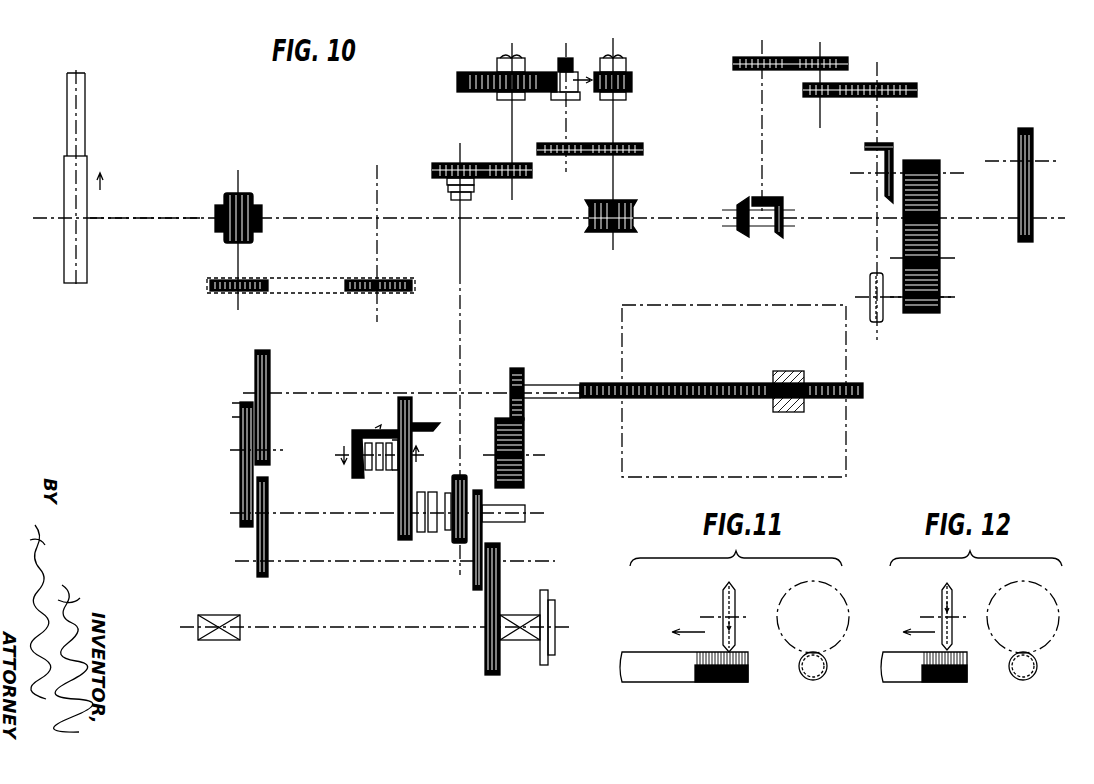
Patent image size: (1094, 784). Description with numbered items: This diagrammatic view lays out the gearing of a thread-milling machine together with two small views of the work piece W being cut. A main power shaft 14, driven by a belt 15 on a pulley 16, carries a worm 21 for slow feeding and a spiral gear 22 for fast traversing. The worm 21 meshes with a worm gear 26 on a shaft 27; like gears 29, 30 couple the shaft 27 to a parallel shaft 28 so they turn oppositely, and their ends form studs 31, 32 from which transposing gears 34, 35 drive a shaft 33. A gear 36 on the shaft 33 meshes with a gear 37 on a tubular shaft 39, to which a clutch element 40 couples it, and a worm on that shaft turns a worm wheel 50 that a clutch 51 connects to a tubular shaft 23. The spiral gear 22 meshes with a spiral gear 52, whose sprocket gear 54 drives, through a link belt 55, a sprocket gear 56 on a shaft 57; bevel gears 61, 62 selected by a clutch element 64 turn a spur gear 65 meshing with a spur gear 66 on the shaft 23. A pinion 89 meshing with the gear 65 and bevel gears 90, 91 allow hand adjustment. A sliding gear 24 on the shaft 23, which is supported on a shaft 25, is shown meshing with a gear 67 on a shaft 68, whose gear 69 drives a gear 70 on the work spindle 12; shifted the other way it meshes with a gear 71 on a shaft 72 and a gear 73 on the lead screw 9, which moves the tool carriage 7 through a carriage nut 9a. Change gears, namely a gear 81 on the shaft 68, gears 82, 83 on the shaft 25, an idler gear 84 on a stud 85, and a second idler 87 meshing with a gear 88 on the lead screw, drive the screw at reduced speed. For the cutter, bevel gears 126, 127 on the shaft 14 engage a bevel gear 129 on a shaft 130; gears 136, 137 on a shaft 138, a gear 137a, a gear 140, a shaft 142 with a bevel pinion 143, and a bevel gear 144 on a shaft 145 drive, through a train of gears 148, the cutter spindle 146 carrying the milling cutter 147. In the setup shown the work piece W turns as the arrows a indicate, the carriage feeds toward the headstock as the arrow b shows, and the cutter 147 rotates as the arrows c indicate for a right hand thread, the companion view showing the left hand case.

In FIG. 10, the tool carriage 7 is at (835, 434).
In FIG. 10, the lead screw 9 is at (640, 398).
In FIG. 10, the carriage nut 9a is at (780, 412).
In FIG. 10, the work spindle 12 is at (320, 627).
In FIG. 10, the main power shaft 14 is at (165, 218).
In FIG. 10, the belt 15 is at (85, 97).
In FIG. 10, the pulley 16 is at (87, 242).
In FIG. 10, the worm 21 is at (597, 230).
In FIG. 10, the spiral gear 22 is at (244, 194).
In FIG. 10, the tubular shaft 23 is at (520, 505).
In FIG. 10, the sliding gear 24 is at (525, 516).
In FIG. 10, the shaft 25 is at (294, 513).
In FIG. 10, the worm gear 26 is at (637, 226).
In FIG. 10, the shaft 27 is at (614, 190).
In FIG. 10, the shaft 28 is at (566, 122).
In FIG. 10, the gear 29 is at (642, 148).
In FIG. 10, the gear 30 is at (560, 155).
In FIG. 10, the stud 31 is at (626, 60).
In FIG. 10, the stud 32 is at (562, 60).
In FIG. 10, the shaft 33 is at (510, 121).
In FIG. 10, the transposing gear 34 is at (588, 72).
In FIG. 10, the transposing gear 35 is at (460, 72).
In FIG. 10, the gear 36 is at (521, 178).
In FIG. 10, the gear 37 is at (440, 165).
In FIG. 10, the tubular shaft 39 is at (462, 302).
In FIG. 10, the clutch element 40 is at (455, 192).
In FIG. 10, the worm wheel 50 is at (457, 544).
In FIG. 10, the clutch 51 is at (428, 534).
In FIG. 10, the spiral gear 52 is at (261, 214).
In FIG. 10, the sprocket gear 54 is at (212, 287).
In FIG. 10, the link belt 55 is at (303, 278).
In FIG. 10, the sprocket gear 56 is at (398, 281).
In FIG. 10, the shaft 57 is at (377, 322).
In FIG. 10, the bevel gear 61 is at (360, 437).
In FIG. 10, the bevel gear 62 is at (396, 478).
In FIG. 10, the clutch element 64 is at (370, 472).
In FIG. 10, the spur gear 65 is at (413, 468).
In FIG. 10, the spur gear 66 is at (398, 520).
In FIG. 10, the gear 67 is at (478, 590).
In FIG. 10, the shaft 68 is at (346, 561).
In FIG. 10, the gear 69 is at (500, 550).
In FIG. 10, the gear 70 is at (486, 660).
In FIG. 10, the gear 71 is at (524, 470).
In FIG. 10, the shaft 72 is at (524, 455).
In FIG. 10, the gear 73 is at (517, 368).
In FIG. 10, the gear 81 is at (265, 578).
In FIG. 10, the gear 82 is at (268, 488).
In FIG. 10, the gear 83 is at (238, 526).
In FIG. 10, the idler gear 84 is at (240, 424).
In FIG. 10, the stud 85 is at (240, 452).
In FIG. 10, the second idler 87 is at (270, 442).
In FIG. 10, the gear 88 is at (255, 358).
In FIG. 10, the pinion 89 is at (400, 398).
In FIG. 10, the bevel gear 90 is at (408, 397).
In FIG. 10, the bevel gear 91 is at (440, 426).
In FIG. 10, the bevel gear 126 is at (737, 210).
In FIG. 10, the bevel gear 127 is at (779, 236).
In FIG. 10, the bevel gear 129 is at (788, 186).
In FIG. 10, the shaft 130 is at (762, 142).
In FIG. 10, the gear 136 is at (745, 58).
In FIG. 10, the gear 137 is at (806, 58).
In FIG. 10, the gear 137a is at (805, 96).
In FIG. 10, the shaft 138 is at (822, 52).
In FIG. 10, the gear 140 is at (917, 90).
In FIG. 10, the shaft 142 is at (876, 143).
In FIG. 10, the bevel pinion 143 is at (865, 147).
In FIG. 10, the bevel gear 144 is at (886, 192).
In FIG. 10, the shaft 145 is at (950, 173).
In FIG. 10, the cutter spindle 146 is at (942, 300).
In FIG. 10, the milling cutter 147 is at (884, 318).
In FIG. 11, the milling cutter 147 is at (733, 586).
In FIG. 12, the milling cutter 147 is at (951, 586).
In FIG. 10, the train of gears 148 is at (940, 230).
In FIG. 11, the arrows a is at (660, 660).
In FIG. 12, the arrows a is at (895, 676).
In FIG. 11, the arrow b is at (684, 632).
In FIG. 12, the arrow b is at (908, 632).
In FIG. 11, the arrows c is at (800, 600).
In FIG. 12, the arrows c is at (1010, 596).
In FIG. 11, the work piece W is at (800, 666).
In FIG. 12, the work piece W is at (886, 682).